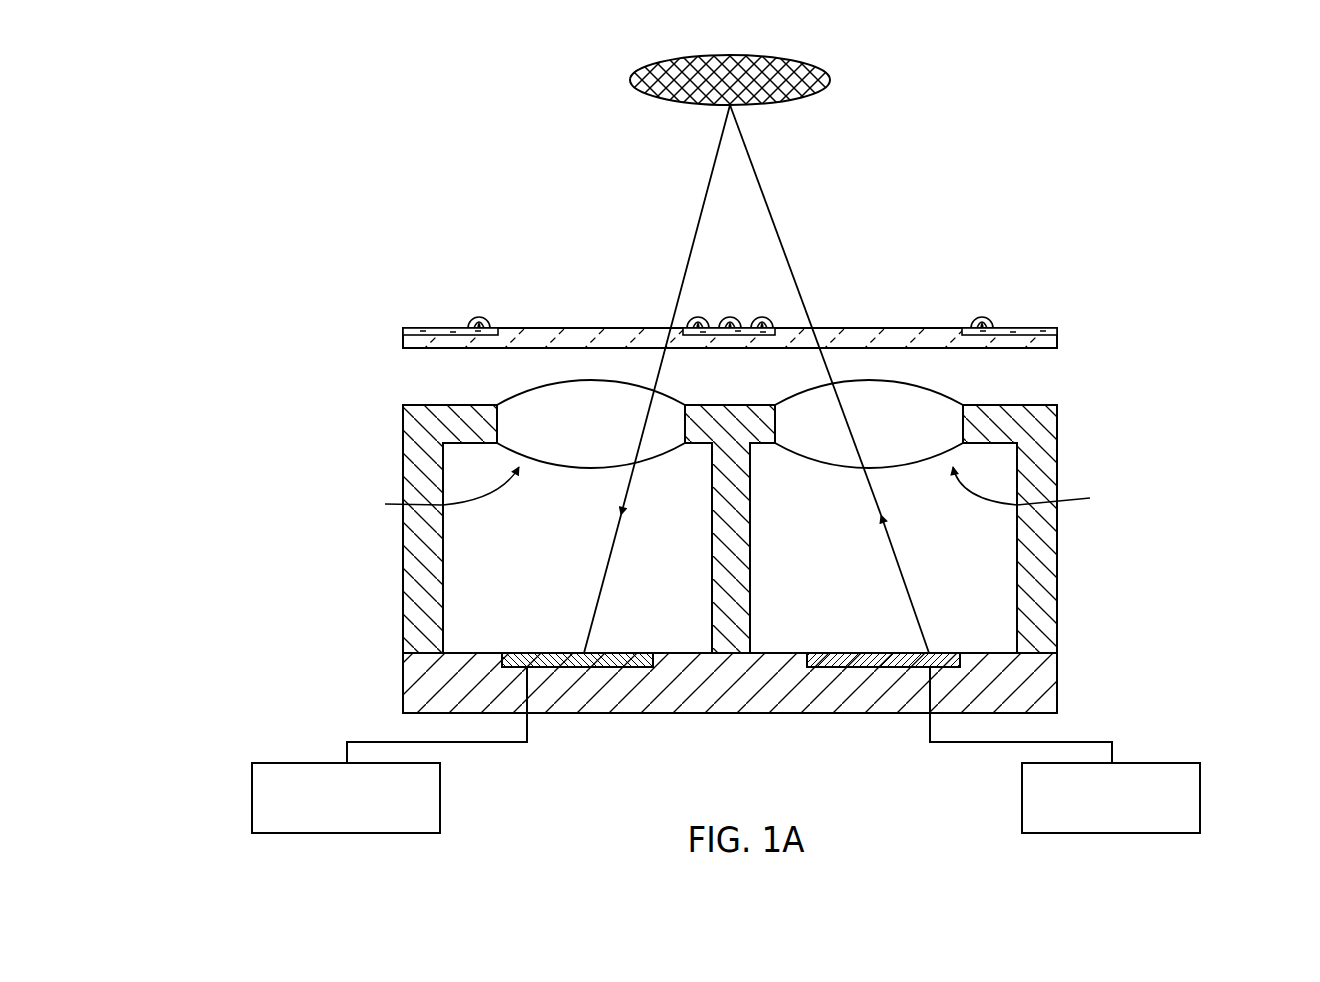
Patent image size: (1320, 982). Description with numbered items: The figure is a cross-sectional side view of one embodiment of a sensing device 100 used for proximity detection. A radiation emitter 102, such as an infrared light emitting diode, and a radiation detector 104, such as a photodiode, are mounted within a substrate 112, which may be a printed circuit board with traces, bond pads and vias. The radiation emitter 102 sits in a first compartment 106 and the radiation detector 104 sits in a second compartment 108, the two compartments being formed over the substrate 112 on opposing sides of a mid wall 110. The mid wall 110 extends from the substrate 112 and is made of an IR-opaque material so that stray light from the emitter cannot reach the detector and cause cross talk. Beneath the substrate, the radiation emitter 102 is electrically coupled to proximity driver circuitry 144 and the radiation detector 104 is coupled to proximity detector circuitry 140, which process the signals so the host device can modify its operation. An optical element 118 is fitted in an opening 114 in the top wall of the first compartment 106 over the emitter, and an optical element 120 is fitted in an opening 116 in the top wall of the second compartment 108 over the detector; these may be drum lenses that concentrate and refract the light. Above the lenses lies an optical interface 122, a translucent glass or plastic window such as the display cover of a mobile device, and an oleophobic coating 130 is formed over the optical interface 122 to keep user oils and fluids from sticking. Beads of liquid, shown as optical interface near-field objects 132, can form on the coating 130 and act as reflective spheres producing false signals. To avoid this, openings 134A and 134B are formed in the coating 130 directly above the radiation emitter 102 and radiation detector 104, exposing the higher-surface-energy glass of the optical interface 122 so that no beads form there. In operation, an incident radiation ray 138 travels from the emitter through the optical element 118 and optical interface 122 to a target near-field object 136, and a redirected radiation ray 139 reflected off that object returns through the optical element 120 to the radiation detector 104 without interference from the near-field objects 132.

The sensing device 100 is at (1092, 171).
The radiation emitter 102 is at (878, 667).
The radiation detector 104 is at (580, 667).
The first compartment 106 is at (1060, 573).
The second compartment 108 is at (400, 578).
The mid wall 110 is at (712, 588).
The substrate 112 is at (1057, 683).
The opening 114 is at (1039, 487).
The opening 116 is at (432, 490).
The optical element 118 is at (943, 390).
The optical element 120 is at (530, 392).
The optical interface 122 is at (1057, 340).
The coating 130 is at (1057, 333).
The optical interface near-field object 132 is at (986, 321).
The opening 134A is at (911, 290).
The opening 134B is at (514, 290).
The target near-field object 136 is at (821, 66).
The incident radiation ray 138 is at (908, 587).
The redirected radiation ray 139 is at (600, 580).
The proximity detector circuitry 140 is at (252, 793).
The proximity driver circuitry 144 is at (1200, 793).